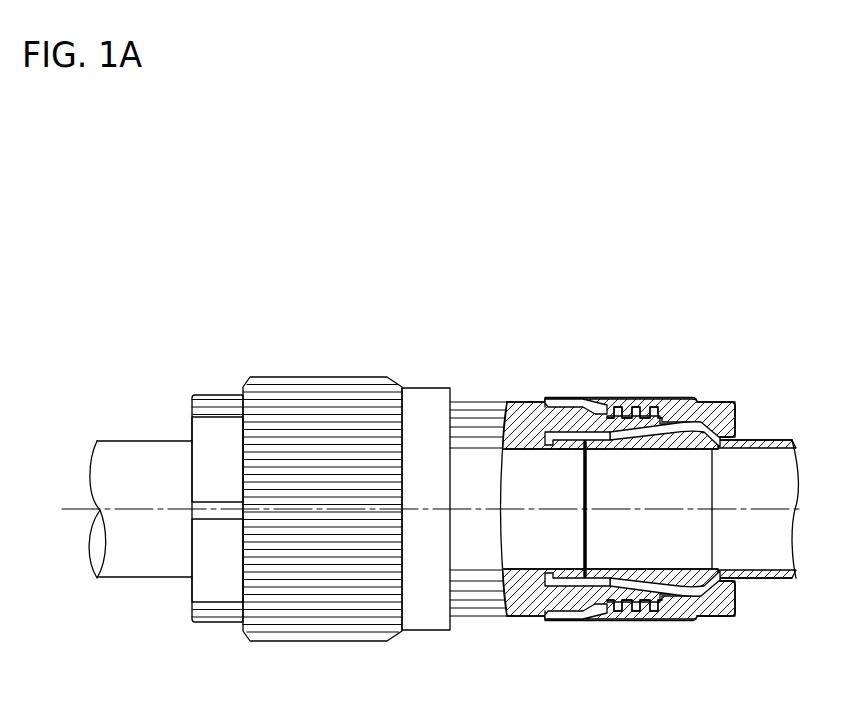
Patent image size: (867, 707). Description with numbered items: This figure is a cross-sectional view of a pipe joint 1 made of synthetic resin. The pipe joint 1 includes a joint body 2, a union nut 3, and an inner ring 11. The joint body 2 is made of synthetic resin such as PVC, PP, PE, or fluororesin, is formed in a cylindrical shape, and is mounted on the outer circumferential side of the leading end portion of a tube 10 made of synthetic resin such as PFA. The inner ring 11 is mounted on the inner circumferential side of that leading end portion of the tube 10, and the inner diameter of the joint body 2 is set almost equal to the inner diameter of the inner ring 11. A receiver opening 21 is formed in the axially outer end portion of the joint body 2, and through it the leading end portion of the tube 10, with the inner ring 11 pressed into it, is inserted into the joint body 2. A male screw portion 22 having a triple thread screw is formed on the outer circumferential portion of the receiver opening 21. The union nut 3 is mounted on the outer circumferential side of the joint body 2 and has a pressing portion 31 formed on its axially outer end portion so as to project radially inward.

The pipe joint 1 is at (519, 344).
The joint body 2 is at (486, 386).
The union nut 3 is at (674, 381).
The tube 10 is at (126, 429).
The inner ring 11 is at (600, 447).
The receiver opening 21 is at (595, 398).
The male screw portion 22 is at (634, 405).
The pressing portion 31 is at (731, 417).